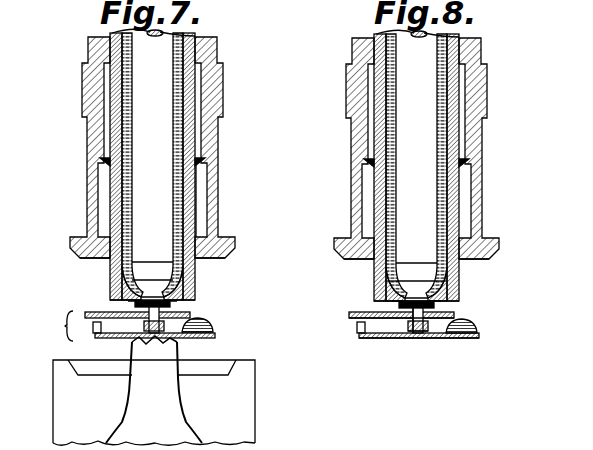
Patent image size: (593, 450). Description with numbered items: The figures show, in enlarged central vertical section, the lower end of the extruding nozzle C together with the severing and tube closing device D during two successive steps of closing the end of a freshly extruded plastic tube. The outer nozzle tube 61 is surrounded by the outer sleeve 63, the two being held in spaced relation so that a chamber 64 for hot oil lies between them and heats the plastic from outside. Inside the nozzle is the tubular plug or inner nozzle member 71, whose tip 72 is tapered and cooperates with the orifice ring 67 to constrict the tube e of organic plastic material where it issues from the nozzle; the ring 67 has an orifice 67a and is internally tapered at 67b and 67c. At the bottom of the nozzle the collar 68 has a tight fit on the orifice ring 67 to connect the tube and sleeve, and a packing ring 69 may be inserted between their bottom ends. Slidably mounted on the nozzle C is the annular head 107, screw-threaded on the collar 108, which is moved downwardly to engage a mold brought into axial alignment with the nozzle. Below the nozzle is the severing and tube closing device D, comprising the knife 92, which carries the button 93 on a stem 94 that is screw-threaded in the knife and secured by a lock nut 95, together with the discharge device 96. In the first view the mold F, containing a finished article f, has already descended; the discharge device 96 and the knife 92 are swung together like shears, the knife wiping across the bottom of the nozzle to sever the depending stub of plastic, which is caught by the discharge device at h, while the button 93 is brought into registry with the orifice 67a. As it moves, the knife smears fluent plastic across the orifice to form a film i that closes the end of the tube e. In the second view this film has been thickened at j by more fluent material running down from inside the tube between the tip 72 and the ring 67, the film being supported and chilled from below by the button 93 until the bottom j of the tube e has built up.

In FIG. 7, the collar 108 is at (212, 88).
In FIG. 7, the tube e is at (173, 106).
In FIG. 8, the tube e is at (442, 180).
In FIG. 7, the inner nozzle member 71 is at (148, 134).
In FIG. 8, the inner nozzle member 71 is at (420, 115).
In FIG. 7, the outer nozzle tube 61 is at (183, 137).
In FIG. 7, the chamber 64 is at (173, 175).
In FIG. 7, the outer sleeve 63 is at (196, 192).
In FIG. 7, the tip 72 is at (148, 290).
In FIG. 8, the tip 72 is at (412, 290).
In FIG. 7, the annular head 107 is at (82, 250).
In FIG. 7, the collar 68 is at (118, 280).
In FIG. 7, the packing ring 69 is at (117, 295).
In FIG. 7, the extruding nozzle C is at (197, 277).
In FIG. 8, the extruding nozzle C is at (461, 282).
In FIG. 7, the film i is at (137, 302).
In FIG. 7, the button 93 is at (177, 302).
In FIG. 8, the button 93 is at (434, 308).
In FIG. 7, the knife 92 is at (190, 314).
In FIG. 8, the knife 92 is at (383, 322).
In FIG. 7, the stem 94 is at (160, 321).
In FIG. 8, the stem 94 is at (407, 322).
In FIG. 7, the lock nut 95 is at (168, 338).
In FIG. 8, the lock nut 95 is at (423, 338).
In FIG. 7, the discharge device 96 is at (198, 337).
In FIG. 8, the discharge device 96 is at (418, 338).
In FIG. 7, the stub of plastic material h is at (205, 327).
In FIG. 7, the severing and tube closing device D is at (60, 326).
In FIG. 7, the blow mold F is at (257, 416).
In FIG. 7, the finished article f is at (172, 422).
In FIG. 8, the orifice ring 67 is at (372, 298).
In FIG. 8, the orifice 67a is at (458, 292).
In FIG. 8, the internal taper 67b is at (393, 278).
In FIG. 8, the internal taper 67c is at (400, 286).
In FIG. 8, the bottom of the tube j is at (434, 324).